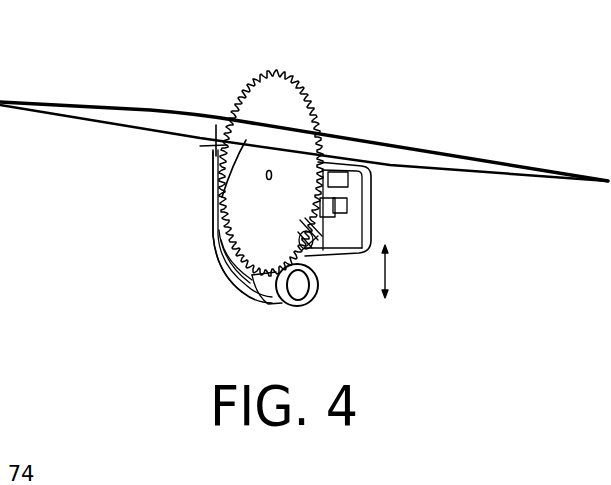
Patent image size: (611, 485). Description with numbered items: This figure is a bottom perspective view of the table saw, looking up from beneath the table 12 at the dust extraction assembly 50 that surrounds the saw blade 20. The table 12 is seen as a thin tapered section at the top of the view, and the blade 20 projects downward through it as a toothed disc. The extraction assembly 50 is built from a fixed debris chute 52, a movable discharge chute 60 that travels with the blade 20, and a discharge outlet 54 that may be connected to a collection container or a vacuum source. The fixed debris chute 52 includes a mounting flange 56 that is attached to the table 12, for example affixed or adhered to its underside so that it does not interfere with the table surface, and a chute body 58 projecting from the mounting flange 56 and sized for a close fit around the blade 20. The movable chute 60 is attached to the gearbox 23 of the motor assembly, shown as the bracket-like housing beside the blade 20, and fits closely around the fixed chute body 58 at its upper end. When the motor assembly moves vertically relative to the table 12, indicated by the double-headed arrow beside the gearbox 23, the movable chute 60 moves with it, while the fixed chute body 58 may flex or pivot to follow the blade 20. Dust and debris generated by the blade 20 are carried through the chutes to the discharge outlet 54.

The table structure 12 is at (151, 110).
The fixed debris chute 52 is at (227, 146).
The mounting flange 56 is at (216, 143).
The blade 20 is at (282, 101).
The gearbox 23 is at (357, 204).
The dust extraction assembly 50 is at (207, 263).
The chute body 58 is at (210, 175).
The movable discharge chute 60 is at (212, 227).
The discharge outlet 54 is at (280, 305).